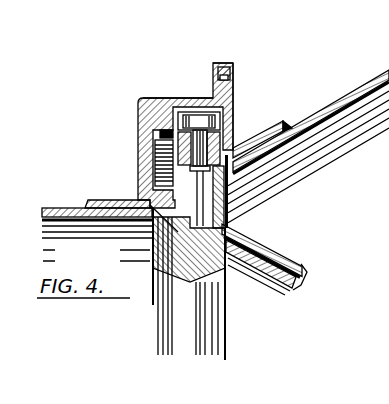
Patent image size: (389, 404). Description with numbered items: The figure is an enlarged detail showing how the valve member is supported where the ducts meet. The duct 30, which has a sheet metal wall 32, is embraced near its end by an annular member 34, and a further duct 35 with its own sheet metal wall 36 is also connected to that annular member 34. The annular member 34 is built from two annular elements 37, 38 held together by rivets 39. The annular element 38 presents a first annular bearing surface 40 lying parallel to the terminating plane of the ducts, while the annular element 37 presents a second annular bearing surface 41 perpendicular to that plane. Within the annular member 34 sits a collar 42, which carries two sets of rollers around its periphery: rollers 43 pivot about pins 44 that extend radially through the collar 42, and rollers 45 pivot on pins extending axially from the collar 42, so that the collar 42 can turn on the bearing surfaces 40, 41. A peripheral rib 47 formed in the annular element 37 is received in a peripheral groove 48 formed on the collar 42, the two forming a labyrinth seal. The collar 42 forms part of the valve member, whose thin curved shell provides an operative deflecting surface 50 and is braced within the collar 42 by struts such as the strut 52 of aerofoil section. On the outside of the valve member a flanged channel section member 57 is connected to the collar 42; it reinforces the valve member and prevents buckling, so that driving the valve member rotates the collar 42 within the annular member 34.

The duct 30 is at (308, 157).
The sheet metal wall 32 is at (368, 82).
The annular member 34 is at (190, 93).
The further duct 35 is at (96, 257).
The sheet metal wall 36 is at (64, 206).
The annular element 37 is at (146, 97).
The annular element 38 is at (233, 64).
The rivet 39 is at (234, 74).
The first annular bearing surface 40 is at (234, 115).
The second annular bearing surface 41 is at (162, 130).
The collar 42 is at (225, 203).
The roller 43 is at (234, 103).
The pin 44 is at (222, 160).
The roller 45 is at (160, 150).
The peripheral rib 47 is at (150, 195).
The peripheral groove 48 is at (228, 218).
The operative deflecting surface 50 is at (276, 288).
The strut 52 is at (226, 350).
The flanged channel section member 57 is at (300, 261).